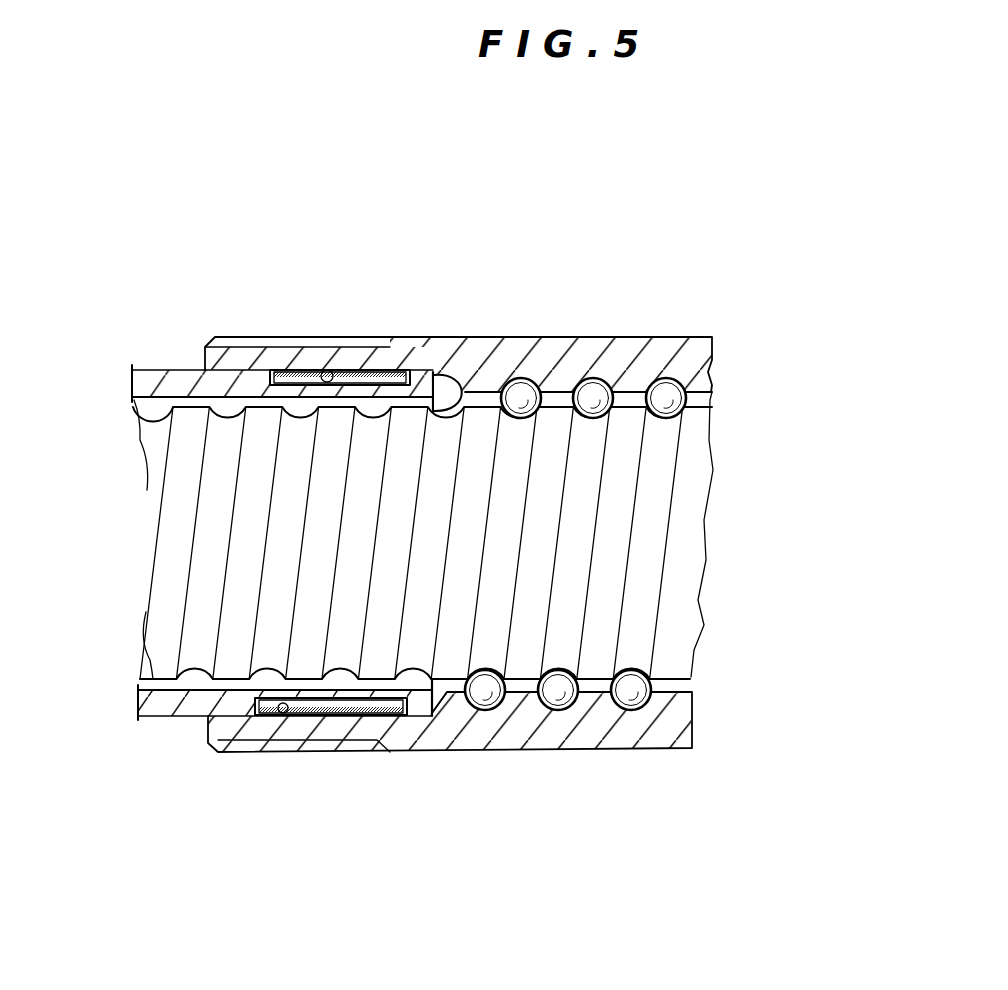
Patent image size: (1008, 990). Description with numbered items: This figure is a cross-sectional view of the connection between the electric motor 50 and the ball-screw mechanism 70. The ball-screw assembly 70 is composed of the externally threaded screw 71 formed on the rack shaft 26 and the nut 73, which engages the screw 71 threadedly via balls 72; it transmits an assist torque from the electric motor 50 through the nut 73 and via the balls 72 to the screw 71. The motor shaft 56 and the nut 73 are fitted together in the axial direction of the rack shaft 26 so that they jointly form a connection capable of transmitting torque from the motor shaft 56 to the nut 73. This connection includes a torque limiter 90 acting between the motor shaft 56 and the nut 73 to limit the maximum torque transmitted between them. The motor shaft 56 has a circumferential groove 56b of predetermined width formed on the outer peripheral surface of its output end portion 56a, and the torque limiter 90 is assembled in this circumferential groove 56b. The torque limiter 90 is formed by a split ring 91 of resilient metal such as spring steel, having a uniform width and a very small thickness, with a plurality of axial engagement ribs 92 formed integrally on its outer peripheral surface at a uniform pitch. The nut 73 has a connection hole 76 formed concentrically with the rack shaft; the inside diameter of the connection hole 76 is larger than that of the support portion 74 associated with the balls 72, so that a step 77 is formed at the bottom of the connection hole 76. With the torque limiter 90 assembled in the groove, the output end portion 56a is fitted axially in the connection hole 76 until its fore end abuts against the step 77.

The electric motor 50 is at (127, 265).
The rack shaft 26 is at (713, 513).
The motor shaft 56 is at (140, 368).
The output end portion 56a is at (173, 370).
The circumferential groove 56b is at (360, 373).
The torque limiter 90 is at (400, 161).
The split ring 91 is at (283, 378).
The engagement ribs 92 is at (340, 378).
The ball-screw assembly 70 is at (723, 690).
The externally threaded screw 71 is at (642, 622).
The balls 72 is at (630, 693).
The nut 73 is at (500, 753).
The support portion 74 is at (437, 740).
The connection hole 76 is at (237, 716).
The step 77 is at (413, 703).